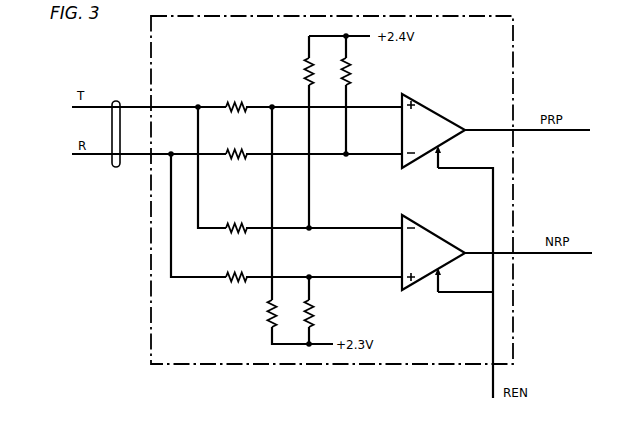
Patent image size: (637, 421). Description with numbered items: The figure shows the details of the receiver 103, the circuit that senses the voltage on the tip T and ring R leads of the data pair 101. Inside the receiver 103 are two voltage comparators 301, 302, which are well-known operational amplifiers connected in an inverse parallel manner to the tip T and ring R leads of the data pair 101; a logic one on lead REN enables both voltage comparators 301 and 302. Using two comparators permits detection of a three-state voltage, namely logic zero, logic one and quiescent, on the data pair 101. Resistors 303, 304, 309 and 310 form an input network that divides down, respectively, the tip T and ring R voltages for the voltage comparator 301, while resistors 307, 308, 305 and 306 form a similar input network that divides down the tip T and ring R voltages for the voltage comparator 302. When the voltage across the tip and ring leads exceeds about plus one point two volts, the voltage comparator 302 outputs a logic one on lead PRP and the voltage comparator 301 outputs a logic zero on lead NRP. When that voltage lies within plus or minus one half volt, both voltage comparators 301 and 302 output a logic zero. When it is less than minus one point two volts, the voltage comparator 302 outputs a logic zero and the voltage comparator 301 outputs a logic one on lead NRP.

The data pair 101 is at (116, 167).
The receiver 103 is at (151, 50).
The voltage comparator 301 is at (443, 215).
The voltage comparator 302 is at (437, 97).
The resistor 303 is at (229, 214).
The resistor 304 is at (304, 73).
The resistor 305 is at (229, 139).
The resistor 306 is at (351, 71).
The resistor 307 is at (229, 94).
The resistor 308 is at (266, 315).
The resistor 309 is at (229, 263).
The resistor 310 is at (315, 313).